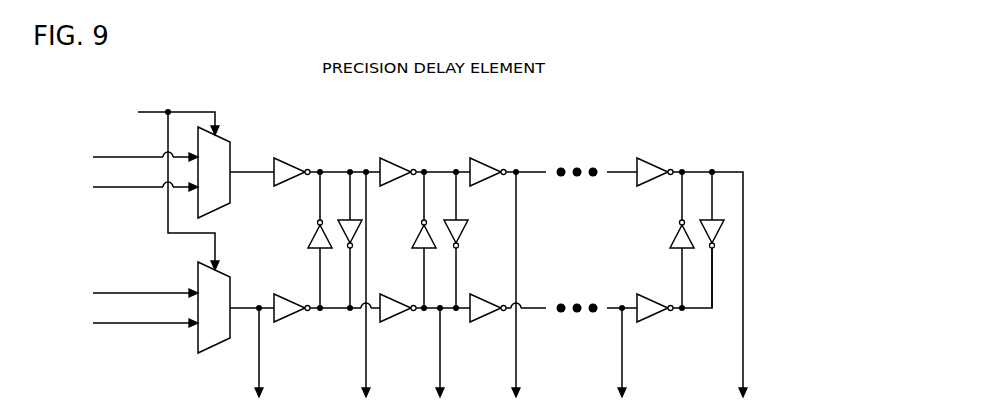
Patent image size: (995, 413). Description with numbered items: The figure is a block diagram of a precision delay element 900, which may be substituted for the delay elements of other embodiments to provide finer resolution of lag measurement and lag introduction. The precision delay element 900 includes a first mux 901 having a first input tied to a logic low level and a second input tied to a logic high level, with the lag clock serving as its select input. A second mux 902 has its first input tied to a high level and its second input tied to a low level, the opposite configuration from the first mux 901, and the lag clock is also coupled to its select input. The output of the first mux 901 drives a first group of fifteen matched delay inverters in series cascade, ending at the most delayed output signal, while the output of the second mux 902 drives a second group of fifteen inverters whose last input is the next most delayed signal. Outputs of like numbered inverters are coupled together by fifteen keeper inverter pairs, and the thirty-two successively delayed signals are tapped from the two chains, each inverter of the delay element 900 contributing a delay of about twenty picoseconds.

The precision delay element 900 is at (741, 120).
The first mux 901 is at (231, 147).
The second mux 902 is at (231, 282).